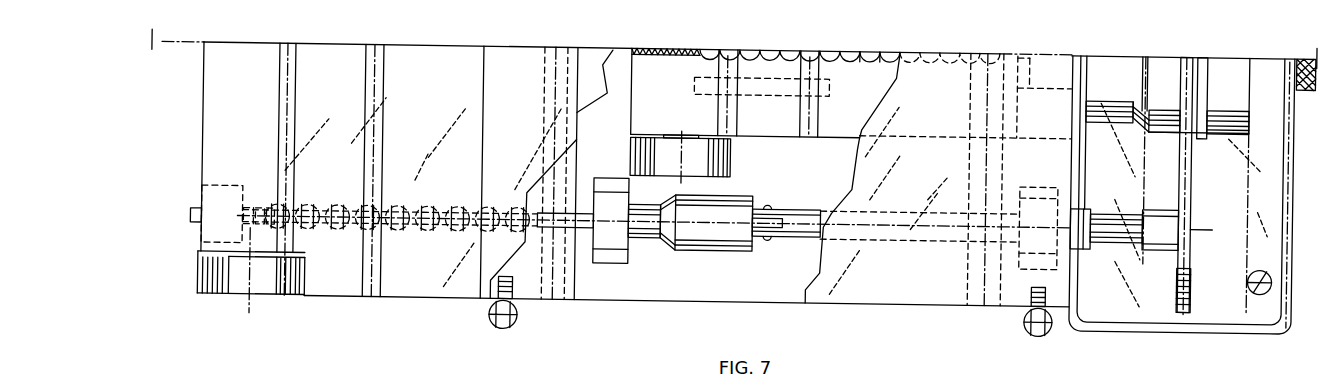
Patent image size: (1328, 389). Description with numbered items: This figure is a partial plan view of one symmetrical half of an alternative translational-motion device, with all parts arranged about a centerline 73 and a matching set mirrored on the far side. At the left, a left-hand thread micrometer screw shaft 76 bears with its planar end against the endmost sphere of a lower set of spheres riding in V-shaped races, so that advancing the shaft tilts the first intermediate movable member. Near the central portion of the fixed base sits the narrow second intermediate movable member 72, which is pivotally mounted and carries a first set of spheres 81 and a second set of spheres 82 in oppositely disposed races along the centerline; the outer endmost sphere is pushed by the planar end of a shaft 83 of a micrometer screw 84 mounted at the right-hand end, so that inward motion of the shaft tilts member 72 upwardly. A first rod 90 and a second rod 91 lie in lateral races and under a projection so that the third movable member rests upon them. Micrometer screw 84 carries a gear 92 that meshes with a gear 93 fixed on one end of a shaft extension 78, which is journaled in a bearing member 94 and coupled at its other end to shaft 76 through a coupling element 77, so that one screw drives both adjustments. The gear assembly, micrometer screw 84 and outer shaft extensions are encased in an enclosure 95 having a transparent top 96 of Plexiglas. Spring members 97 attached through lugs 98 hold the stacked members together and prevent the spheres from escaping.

The second intermediate movable member 72 is at (770, 119).
The centerline 73 is at (190, 42).
The micrometer screw shaft 76 is at (582, 200).
The coupling element 77 is at (770, 232).
The shaft extension 78 is at (883, 222).
The first set of spheres 81 is at (868, 51).
The second set of spheres 82 is at (873, 48).
The shaft 83 is at (1015, 46).
The micrometer screw 84 is at (1231, 119).
The first rod 90 is at (557, 294).
The second rod 91 is at (952, 123).
The gear 92 is at (1188, 106).
The gear 93 is at (1187, 265).
The bearing member 94 is at (1085, 196).
The enclosure 95 is at (1296, 294).
The transparent top 96 is at (832, 77).
The spring member 97 is at (494, 321).
The lug 98 is at (517, 308).